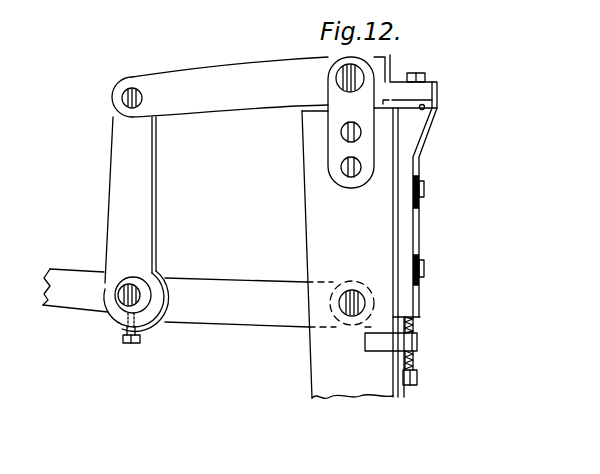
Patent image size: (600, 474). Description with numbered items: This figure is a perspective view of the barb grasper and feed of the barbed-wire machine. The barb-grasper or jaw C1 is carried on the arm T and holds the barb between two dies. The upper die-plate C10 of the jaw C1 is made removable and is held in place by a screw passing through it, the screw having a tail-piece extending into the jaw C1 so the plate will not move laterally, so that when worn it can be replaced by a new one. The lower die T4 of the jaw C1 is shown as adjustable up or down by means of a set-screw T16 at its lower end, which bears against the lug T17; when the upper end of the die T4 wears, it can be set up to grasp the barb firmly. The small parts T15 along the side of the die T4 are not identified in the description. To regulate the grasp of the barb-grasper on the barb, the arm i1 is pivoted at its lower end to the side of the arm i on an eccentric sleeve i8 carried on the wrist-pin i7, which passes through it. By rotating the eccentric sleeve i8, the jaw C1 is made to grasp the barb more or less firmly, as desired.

The arm i1 is at (216, 194).
The arm i is at (209, 298).
The eccentric sleeve i8 is at (142, 287).
The wrist-pin i7 is at (121, 300).
The arm T is at (350, 253).
The barb-grasper or jaw C1 is at (386, 62).
The upper die-plate C10 is at (432, 103).
The lower die T4 is at (415, 252).
The clips T15 is at (421, 180).
The set-screw T16 is at (414, 366).
The lug T17 is at (418, 342).